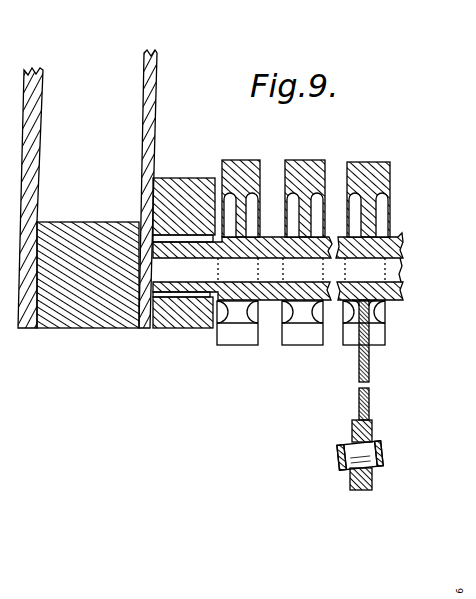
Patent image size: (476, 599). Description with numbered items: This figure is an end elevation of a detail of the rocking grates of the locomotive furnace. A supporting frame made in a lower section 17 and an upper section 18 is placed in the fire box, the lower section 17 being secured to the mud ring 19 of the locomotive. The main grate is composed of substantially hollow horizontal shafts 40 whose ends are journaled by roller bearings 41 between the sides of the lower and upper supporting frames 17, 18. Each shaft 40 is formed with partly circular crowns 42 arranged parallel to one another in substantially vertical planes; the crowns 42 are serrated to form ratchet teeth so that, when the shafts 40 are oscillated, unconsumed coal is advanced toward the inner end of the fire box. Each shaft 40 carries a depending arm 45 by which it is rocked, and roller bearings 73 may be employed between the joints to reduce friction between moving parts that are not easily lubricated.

The lower section of the supporting frame 17 is at (188, 316).
The upper section of the supporting frame 18 is at (172, 178).
The mud ring 19 is at (88, 316).
The shaft 40 is at (400, 282).
The roller bearings 41 is at (180, 292).
The crowns 42 is at (347, 162).
The depending arm 45 is at (357, 373).
The roller bearings 73 is at (345, 465).